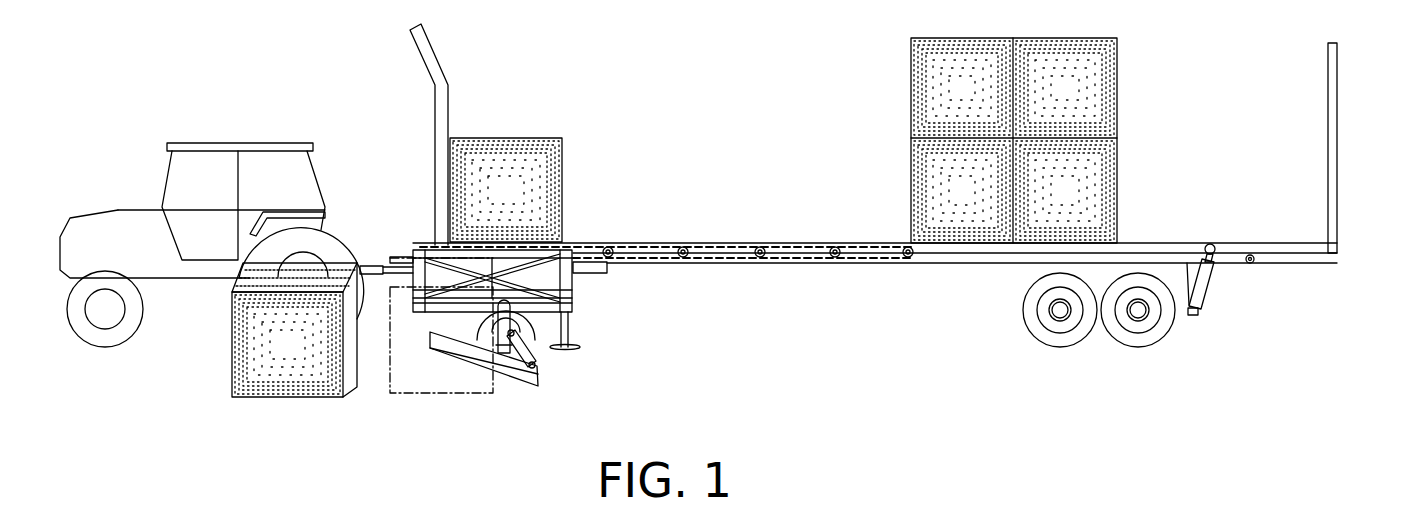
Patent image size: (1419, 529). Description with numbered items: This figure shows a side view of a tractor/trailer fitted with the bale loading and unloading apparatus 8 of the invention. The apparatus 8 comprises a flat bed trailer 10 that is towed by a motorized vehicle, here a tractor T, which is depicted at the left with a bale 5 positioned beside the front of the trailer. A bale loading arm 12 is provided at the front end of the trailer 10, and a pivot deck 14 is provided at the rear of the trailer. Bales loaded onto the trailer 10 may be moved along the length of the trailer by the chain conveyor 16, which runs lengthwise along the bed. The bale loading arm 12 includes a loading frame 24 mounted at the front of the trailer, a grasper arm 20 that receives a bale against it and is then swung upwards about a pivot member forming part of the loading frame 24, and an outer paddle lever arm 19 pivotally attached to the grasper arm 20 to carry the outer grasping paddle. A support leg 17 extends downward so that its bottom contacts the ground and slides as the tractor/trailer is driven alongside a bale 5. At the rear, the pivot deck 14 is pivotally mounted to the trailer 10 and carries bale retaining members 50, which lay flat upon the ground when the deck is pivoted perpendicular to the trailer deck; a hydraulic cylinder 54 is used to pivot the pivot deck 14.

The tractor T is at (118, 210).
The bale 5 is at (288, 375).
The apparatus 8 is at (896, 223).
The flat bed trailer 10 is at (713, 252).
The bale loading arm 12 is at (565, 278).
The pivot deck 14 is at (1297, 250).
The chain conveyor 16 is at (812, 247).
The support leg 17 is at (570, 332).
The outer paddle lever arm 19 is at (508, 370).
The grasper arm 20 is at (503, 333).
The loading frame 24 is at (568, 290).
The bale retaining members 50 is at (1335, 122).
The hydraulic cylinder 54 is at (1207, 275).